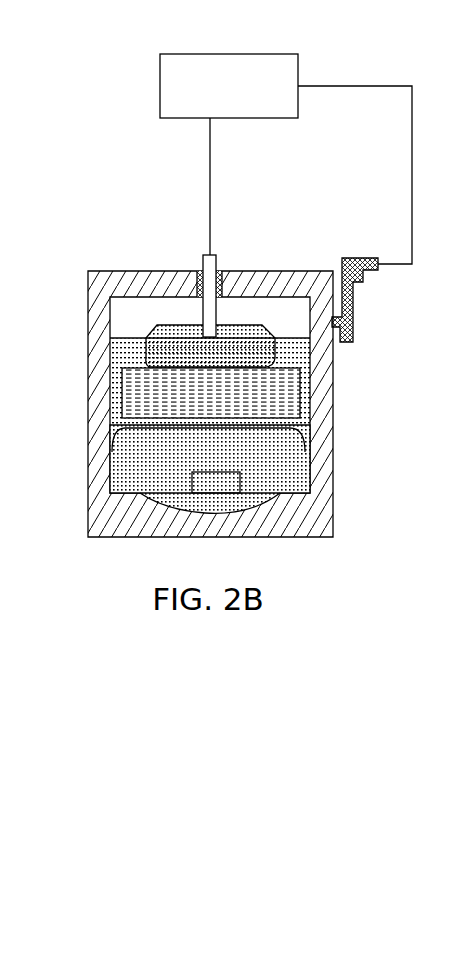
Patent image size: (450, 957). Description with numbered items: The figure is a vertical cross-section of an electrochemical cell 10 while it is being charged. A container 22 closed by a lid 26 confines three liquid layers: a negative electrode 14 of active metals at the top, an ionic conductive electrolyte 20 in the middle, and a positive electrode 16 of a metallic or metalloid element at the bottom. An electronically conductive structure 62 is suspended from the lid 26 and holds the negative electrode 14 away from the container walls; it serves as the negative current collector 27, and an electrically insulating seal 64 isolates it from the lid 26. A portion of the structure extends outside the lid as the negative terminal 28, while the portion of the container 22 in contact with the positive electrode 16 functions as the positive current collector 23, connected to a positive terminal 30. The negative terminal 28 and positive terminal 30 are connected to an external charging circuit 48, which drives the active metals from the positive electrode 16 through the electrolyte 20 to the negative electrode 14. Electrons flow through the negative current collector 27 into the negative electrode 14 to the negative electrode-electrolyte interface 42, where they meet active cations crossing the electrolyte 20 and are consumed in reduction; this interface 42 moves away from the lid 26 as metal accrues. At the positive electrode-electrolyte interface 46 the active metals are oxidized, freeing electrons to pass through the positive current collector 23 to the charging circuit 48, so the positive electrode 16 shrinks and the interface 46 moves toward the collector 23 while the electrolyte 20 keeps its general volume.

The electrochemical cell 10 is at (47, 212).
The negative electrode 14 is at (150, 337).
The positive electrode 16 is at (140, 460).
The electrolyte 20 is at (118, 401).
The container 22 is at (316, 514).
The positive current collector 23 is at (207, 525).
The lid 26 is at (137, 270).
The negative current collector 27 is at (245, 335).
The negative terminal 28 is at (203, 256).
The positive terminal 30 is at (360, 258).
The negative electrode-electrolyte interface 42 is at (238, 368).
The positive electrode-electrolyte interface 46 is at (235, 433).
The charging circuit 48 is at (228, 54).
The electronically conductive structure 62 is at (194, 318).
The electrically insulating seal 64 is at (225, 268).